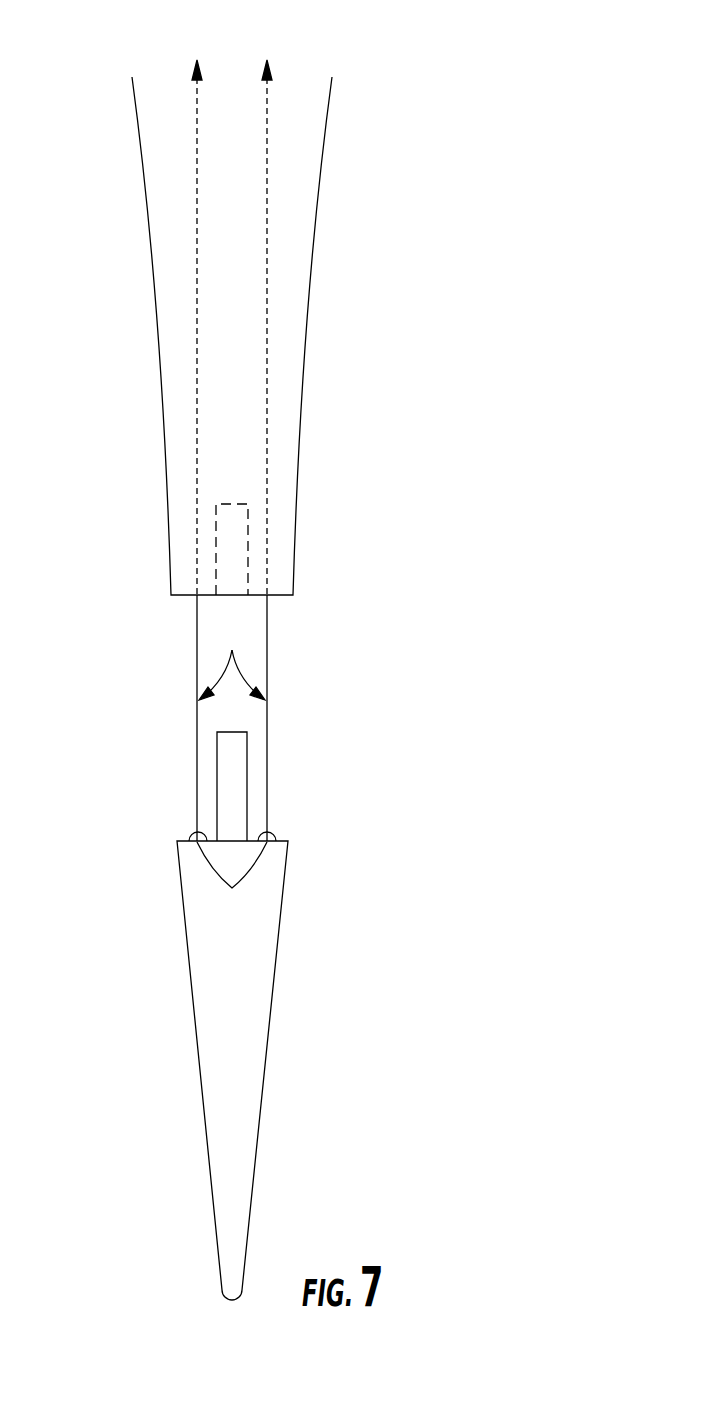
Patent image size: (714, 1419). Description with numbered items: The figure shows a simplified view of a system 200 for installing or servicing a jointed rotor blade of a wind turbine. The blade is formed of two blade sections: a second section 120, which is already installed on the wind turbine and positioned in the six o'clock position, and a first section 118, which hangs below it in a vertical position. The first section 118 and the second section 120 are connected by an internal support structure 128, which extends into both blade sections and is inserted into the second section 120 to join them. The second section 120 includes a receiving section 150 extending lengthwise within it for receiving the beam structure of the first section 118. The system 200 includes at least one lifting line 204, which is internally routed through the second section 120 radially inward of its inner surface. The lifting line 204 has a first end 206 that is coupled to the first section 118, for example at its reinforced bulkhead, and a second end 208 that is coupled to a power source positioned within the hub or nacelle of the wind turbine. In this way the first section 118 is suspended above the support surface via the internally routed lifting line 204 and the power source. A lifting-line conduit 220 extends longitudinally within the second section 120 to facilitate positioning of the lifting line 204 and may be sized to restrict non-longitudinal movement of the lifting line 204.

The system 200 is at (476, 321).
The second section 120 is at (290, 172).
The lifting line 204 is at (197, 394).
The second end 208 is at (189, 104).
The receiving section 150 is at (238, 515).
The internal support structure 128 is at (234, 772).
The first end 206 is at (301, 826).
The lifting-line conduit 220 is at (232, 885).
The first section 118 is at (270, 913).